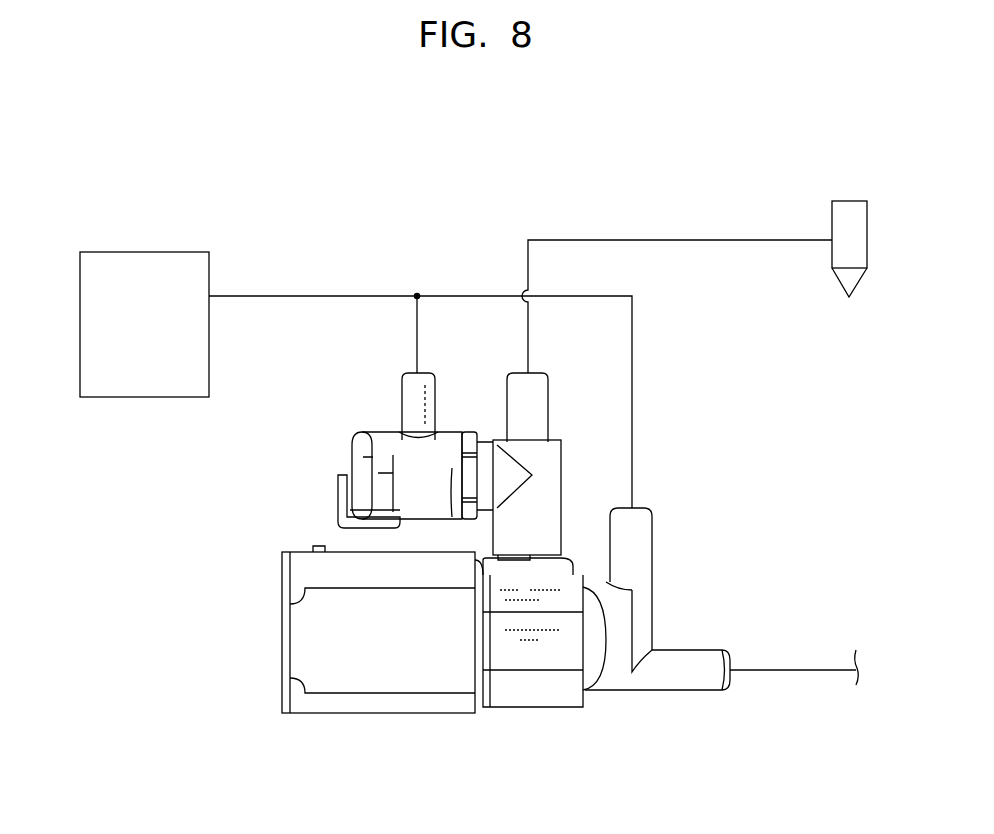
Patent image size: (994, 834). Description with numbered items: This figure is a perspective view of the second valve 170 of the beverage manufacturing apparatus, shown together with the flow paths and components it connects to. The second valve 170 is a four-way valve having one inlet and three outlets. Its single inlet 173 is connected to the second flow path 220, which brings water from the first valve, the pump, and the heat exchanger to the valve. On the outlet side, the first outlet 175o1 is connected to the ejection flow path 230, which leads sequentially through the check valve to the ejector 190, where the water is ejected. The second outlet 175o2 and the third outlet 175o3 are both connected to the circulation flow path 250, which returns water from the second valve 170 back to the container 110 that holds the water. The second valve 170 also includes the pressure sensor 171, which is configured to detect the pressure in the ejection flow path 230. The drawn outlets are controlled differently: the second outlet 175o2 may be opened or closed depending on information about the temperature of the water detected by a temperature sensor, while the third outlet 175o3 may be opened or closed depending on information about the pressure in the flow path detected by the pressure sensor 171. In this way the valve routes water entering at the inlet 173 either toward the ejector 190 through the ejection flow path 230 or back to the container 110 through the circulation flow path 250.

The container 110 is at (148, 252).
The circulation flow path 250 is at (298, 294).
The ejection flow path 230 is at (688, 239).
The ejector 190 is at (841, 200).
The third outlet 175o3 is at (415, 396).
The first outlet 175o1 is at (545, 390).
The second outlet 175o2 is at (652, 543).
The pressure sensor 171 is at (375, 460).
The inlet 173 is at (692, 680).
The second flow path 220 is at (795, 672).
The second valve 170 is at (255, 525).